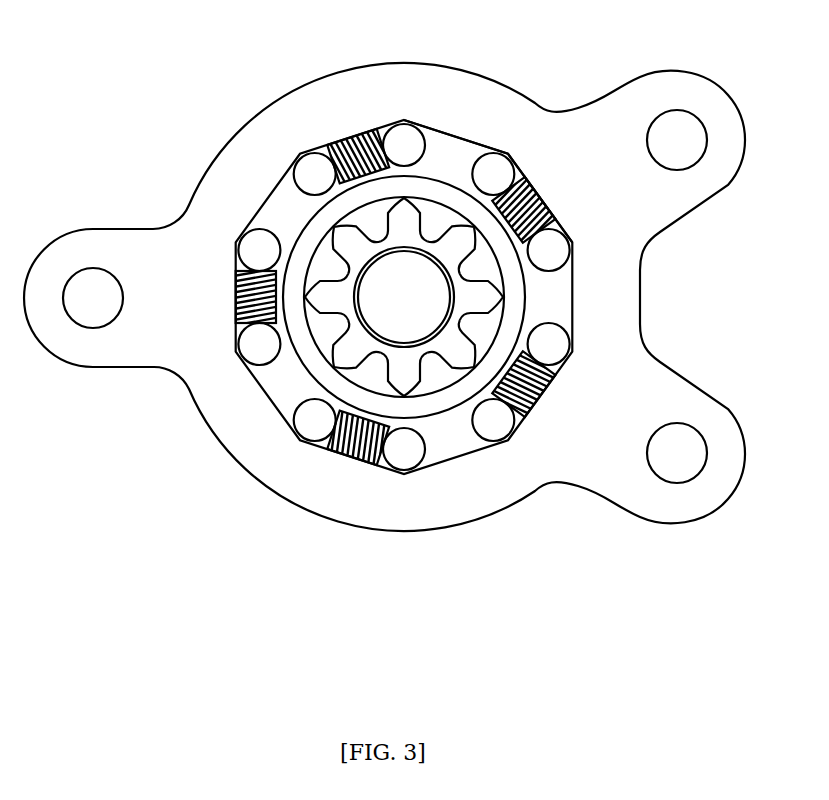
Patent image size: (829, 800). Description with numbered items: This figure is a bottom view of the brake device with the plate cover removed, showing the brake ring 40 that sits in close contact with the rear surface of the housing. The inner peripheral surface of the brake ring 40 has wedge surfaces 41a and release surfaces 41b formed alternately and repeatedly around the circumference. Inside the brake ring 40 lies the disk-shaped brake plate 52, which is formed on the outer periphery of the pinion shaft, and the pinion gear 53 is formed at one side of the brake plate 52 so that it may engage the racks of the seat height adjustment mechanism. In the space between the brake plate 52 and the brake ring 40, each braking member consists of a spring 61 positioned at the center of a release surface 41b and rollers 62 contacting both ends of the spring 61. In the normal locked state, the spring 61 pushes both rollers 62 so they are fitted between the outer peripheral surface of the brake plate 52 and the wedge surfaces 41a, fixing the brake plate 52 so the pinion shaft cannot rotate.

The brake ring 40 is at (362, 528).
The wedge surface 41a is at (485, 167).
The release surface 41b is at (547, 187).
The brake plate 52 is at (447, 393).
The pinion gear 53 is at (347, 352).
The spring 61 is at (558, 212).
The roller 62 is at (497, 152).